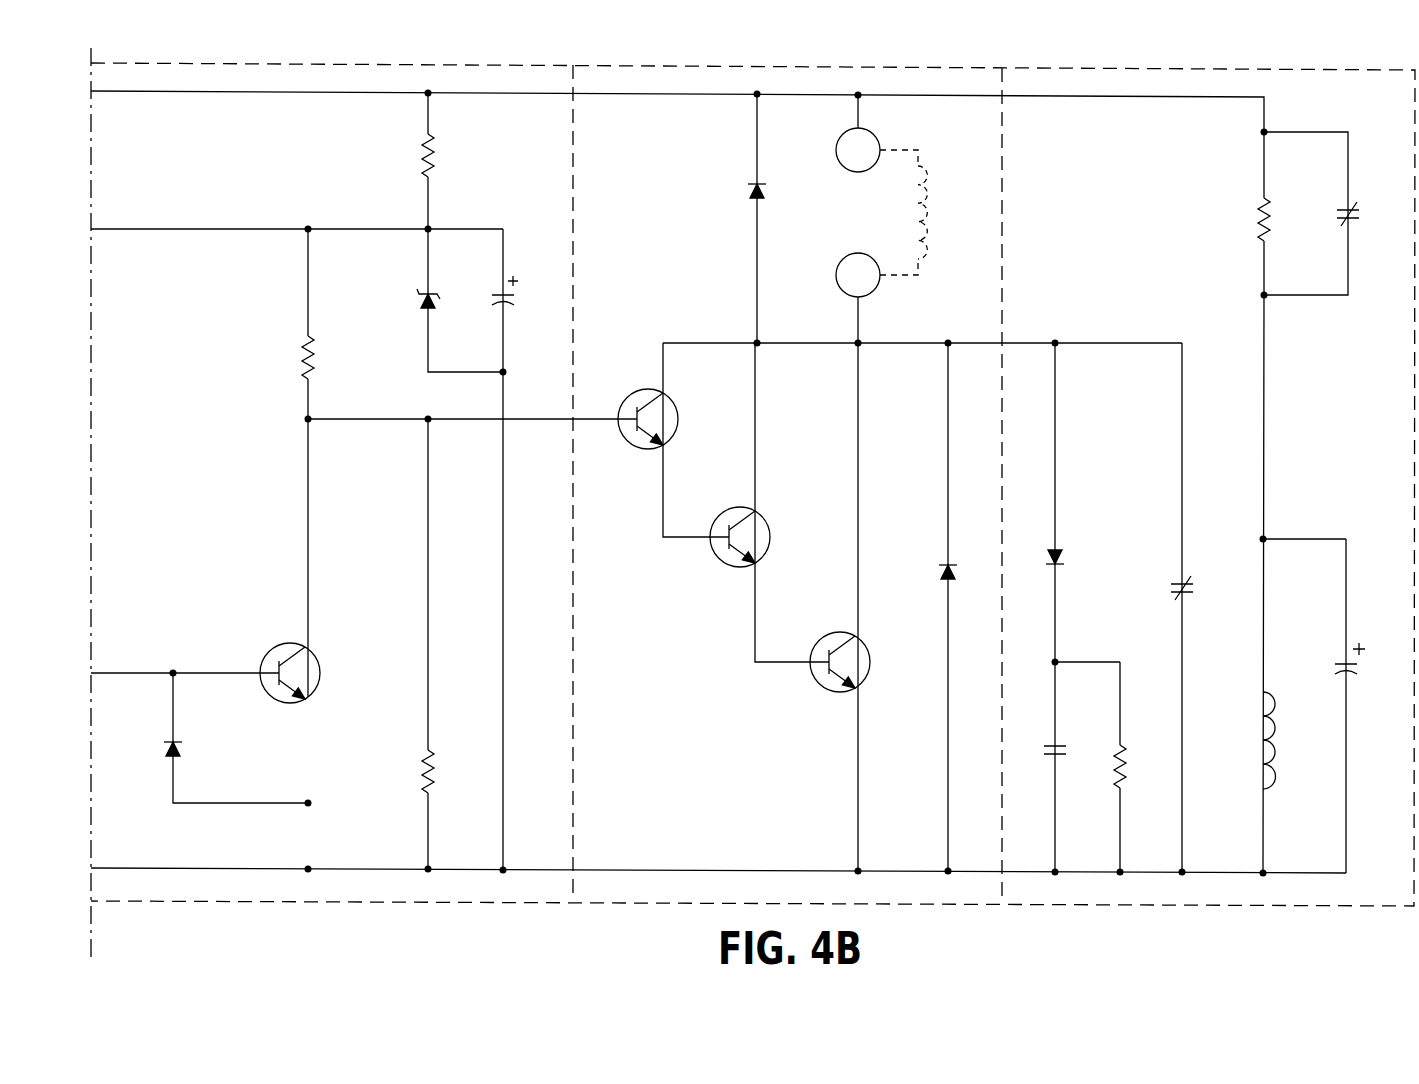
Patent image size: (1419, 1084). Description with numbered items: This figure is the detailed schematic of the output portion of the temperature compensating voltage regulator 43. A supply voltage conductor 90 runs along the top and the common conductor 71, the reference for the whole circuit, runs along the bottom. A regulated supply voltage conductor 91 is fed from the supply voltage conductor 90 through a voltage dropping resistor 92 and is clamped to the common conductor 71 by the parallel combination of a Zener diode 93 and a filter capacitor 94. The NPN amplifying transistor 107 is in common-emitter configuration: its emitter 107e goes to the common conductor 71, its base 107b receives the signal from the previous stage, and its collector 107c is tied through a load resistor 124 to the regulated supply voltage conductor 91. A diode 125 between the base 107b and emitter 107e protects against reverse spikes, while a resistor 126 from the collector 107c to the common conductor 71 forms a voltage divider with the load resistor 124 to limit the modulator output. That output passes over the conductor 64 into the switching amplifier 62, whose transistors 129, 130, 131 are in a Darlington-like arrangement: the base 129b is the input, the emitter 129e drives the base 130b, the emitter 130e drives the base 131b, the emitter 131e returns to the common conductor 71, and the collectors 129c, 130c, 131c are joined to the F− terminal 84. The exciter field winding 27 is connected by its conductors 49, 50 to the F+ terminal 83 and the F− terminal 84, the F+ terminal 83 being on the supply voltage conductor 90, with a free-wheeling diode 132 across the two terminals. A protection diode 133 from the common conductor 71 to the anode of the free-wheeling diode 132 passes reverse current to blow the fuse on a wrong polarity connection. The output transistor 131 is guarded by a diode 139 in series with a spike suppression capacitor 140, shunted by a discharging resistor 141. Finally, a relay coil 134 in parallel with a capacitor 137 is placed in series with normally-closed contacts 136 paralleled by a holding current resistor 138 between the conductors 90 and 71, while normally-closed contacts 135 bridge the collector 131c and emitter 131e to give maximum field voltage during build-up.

The regulator 43 is at (211, 69).
The supply voltage conductor 90 is at (165, 92).
The regulated supply voltage conductor 91 is at (152, 228).
The common conductor 71 is at (149, 872).
The conductor 64 is at (548, 418).
The switching amplifier 62 is at (697, 294).
The voltage dropping resistor 92 is at (409, 161).
The Zener diode 93 is at (412, 311).
The filter capacitor 94 is at (521, 290).
The load resistor 124 is at (295, 353).
The amplifying transistor 107 is at (238, 654).
The base 107b is at (185, 661).
The collector 107c is at (332, 649).
The emitter 107e is at (332, 695).
The diode 125 is at (165, 759).
The resistor 126 is at (413, 786).
The free-wheeling diode 132 is at (739, 193).
The F+ terminal 83 is at (836, 141).
The F− terminal 84 is at (836, 264).
The exciter field winding conductor 49 is at (904, 149).
The exciter field winding conductor 50 is at (900, 278).
The field winding 27 is at (930, 210).
The amplifying transistor 129 is at (664, 440).
The base 129b is at (611, 444).
The collector 129c is at (690, 394).
The emitter 129e is at (689, 442).
The amplifying transistor 130 is at (745, 502).
The base 130b is at (691, 551).
The collector 130c is at (783, 514).
The emitter 130e is at (782, 560).
The output transistor 131 is at (837, 607).
The base 131b is at (784, 676).
The collector 131c is at (882, 636).
The emitter 131e is at (881, 686).
The protection diode 133 is at (939, 565).
The holding current resistor 138 is at (1243, 234).
The normally-closed contacts 136 is at (1337, 234).
The diode 139 is at (1068, 553).
The voltage spike suppression capacitor 140 is at (1063, 742).
The discharging resistor 141 is at (1108, 768).
The normally-closed contacts 135 is at (1169, 586).
The relay coil 134 is at (1276, 740).
The capacitor 137 is at (1330, 652).